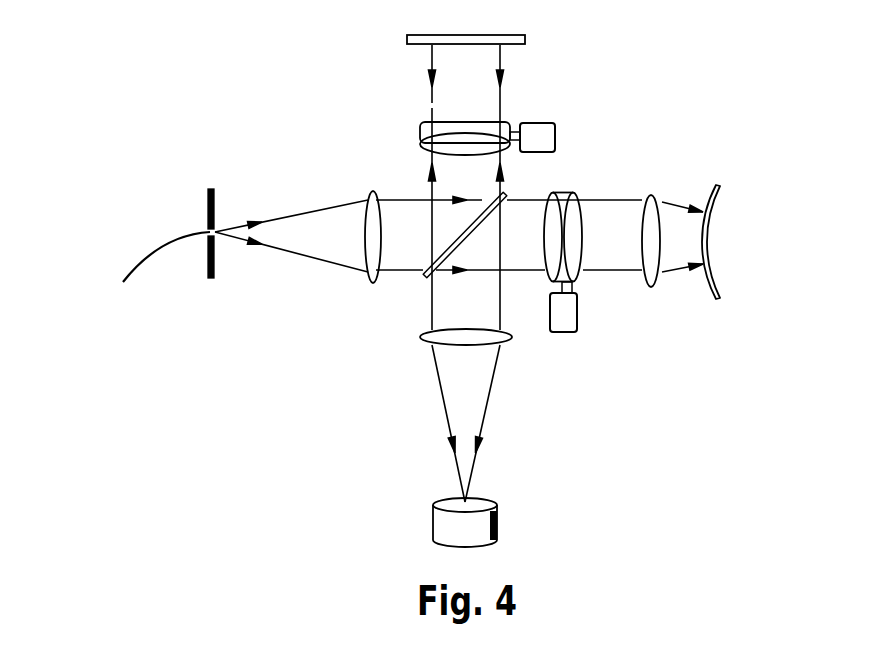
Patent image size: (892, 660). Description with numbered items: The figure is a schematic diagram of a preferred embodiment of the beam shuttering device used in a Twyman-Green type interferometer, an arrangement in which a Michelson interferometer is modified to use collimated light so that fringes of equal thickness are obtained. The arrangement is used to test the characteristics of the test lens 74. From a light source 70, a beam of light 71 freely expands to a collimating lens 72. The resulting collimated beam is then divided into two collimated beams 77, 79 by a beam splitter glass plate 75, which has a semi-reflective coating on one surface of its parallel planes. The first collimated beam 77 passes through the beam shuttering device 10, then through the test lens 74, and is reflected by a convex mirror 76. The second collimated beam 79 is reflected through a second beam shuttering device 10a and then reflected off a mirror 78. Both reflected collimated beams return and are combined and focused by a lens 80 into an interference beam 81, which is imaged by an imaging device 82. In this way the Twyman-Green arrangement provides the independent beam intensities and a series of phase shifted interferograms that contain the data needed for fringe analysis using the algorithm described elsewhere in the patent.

The light source 70 is at (165, 245).
The beam of light 71 is at (315, 230).
The collimating lens 72 is at (373, 191).
The test lens 74 is at (651, 195).
The beam splitter glass plate 75 is at (423, 277).
The convex mirror 76 is at (715, 183).
The first collimated beam 77 is at (618, 237).
The mirror 78 is at (525, 40).
The second collimated beam 79 is at (462, 57).
The lens 80 is at (467, 345).
The interference beam 81 is at (465, 413).
The imaging device 82 is at (497, 530).
The beam shuttering device 10 is at (563, 332).
The beam shuttering device 10a is at (555, 137).